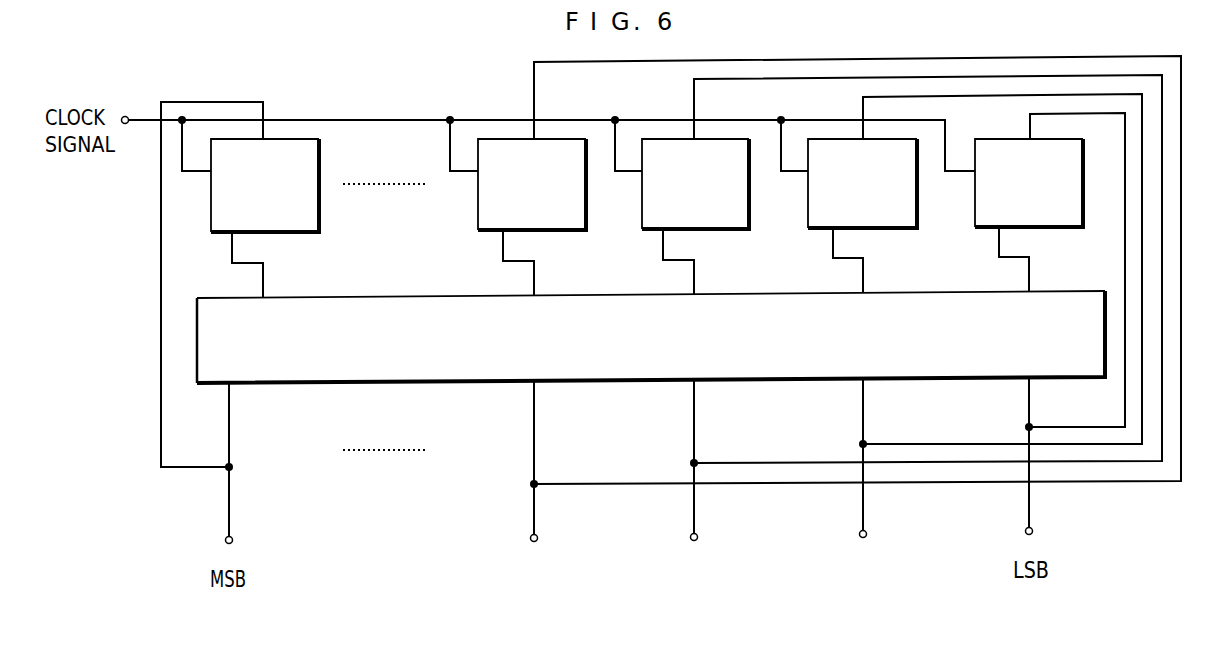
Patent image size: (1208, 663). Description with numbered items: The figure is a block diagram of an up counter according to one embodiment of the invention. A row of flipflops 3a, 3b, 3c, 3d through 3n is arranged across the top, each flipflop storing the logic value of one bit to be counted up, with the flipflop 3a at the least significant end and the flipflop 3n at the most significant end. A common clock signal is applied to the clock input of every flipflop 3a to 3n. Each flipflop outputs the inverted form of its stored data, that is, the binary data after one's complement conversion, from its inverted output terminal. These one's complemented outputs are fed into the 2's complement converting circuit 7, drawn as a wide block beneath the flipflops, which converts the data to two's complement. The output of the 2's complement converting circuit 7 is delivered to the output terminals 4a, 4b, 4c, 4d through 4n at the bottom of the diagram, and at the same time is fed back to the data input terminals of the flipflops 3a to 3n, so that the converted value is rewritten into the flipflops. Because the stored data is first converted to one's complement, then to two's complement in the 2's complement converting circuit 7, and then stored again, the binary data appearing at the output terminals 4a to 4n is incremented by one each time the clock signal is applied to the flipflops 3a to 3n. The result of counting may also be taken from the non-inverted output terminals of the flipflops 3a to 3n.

The flipflop 3a is at (1082, 194).
The flipflop 3b is at (916, 195).
The flipflop 3c is at (748, 196).
The flipflop 3d is at (585, 197).
The flipflop 3n is at (318, 198).
The 2's complement converting circuit 7 is at (1074, 290).
The output terminal 4a is at (1032, 533).
The output terminal 4b is at (866, 536).
The output terminal 4c is at (697, 539).
The output terminal 4d is at (537, 540).
The output terminal 4n is at (232, 542).